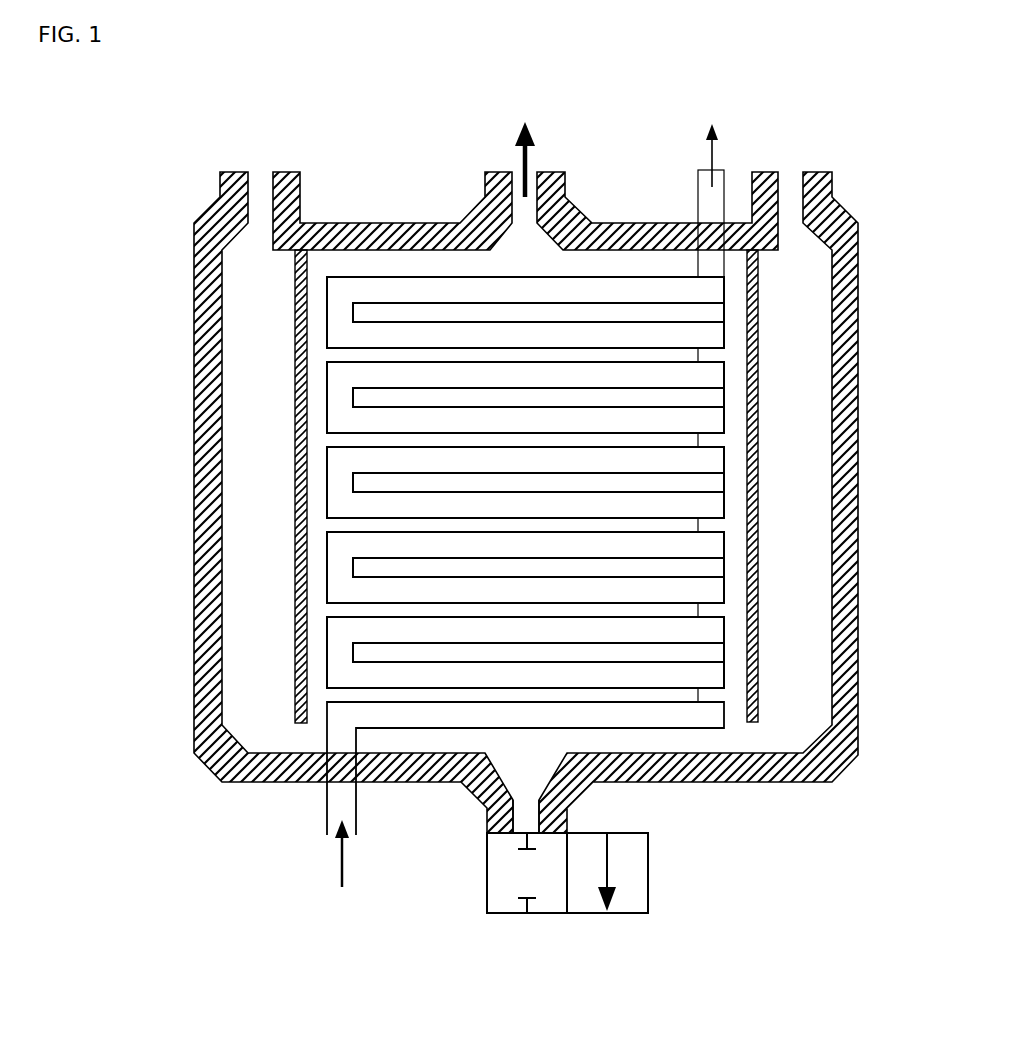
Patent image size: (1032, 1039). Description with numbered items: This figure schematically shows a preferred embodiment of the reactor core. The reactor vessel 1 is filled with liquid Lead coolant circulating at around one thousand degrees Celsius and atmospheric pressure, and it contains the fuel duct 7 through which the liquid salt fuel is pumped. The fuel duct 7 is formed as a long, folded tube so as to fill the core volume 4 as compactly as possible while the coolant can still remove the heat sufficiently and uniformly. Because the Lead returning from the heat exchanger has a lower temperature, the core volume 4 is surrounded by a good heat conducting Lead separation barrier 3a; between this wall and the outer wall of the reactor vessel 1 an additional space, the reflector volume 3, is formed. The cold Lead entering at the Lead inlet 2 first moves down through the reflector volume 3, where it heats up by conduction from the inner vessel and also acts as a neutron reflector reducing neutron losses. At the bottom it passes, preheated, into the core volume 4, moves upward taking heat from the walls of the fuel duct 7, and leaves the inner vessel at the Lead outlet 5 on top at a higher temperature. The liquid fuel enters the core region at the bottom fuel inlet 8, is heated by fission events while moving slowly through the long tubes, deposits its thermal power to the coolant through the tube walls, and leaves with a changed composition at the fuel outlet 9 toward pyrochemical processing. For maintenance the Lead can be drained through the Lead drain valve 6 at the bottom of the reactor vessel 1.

The reactor vessel 1 is at (186, 465).
The Lead inlet 2 is at (260, 170).
The reflector volume 3 is at (522, 486).
The Lead separation barrier 3a is at (290, 623).
The core volume 4 is at (525, 779).
The Lead outlet 5 is at (537, 149).
The Lead drain valve 6 is at (584, 873).
The fuel duct 7 is at (678, 499).
The fuel inlet 8 is at (515, 801).
The fuel outlet 9 is at (722, 401).